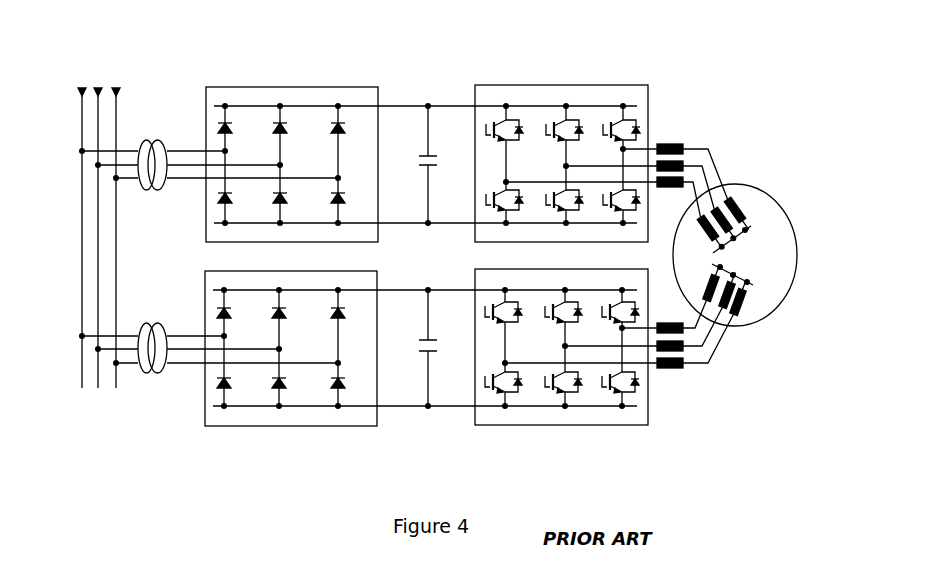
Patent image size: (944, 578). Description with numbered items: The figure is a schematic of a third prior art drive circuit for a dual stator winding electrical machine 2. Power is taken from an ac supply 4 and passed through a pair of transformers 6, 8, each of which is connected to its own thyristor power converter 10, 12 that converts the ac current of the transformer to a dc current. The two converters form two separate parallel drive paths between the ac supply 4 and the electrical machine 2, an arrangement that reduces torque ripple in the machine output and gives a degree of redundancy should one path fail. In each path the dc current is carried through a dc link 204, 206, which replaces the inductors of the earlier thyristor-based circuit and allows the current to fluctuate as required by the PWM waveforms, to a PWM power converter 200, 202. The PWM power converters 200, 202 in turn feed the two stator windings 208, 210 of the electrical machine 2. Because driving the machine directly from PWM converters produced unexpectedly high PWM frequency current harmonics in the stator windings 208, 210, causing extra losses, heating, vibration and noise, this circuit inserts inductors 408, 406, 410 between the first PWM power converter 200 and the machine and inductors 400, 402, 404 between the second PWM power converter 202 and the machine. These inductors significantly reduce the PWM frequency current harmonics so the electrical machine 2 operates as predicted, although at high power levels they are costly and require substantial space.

The ac supply 4 is at (104, 78).
The transformer 6 is at (148, 138).
The transformer 8 is at (158, 375).
The thyristor power converter 10 is at (294, 86).
The thyristor power converter 12 is at (274, 427).
The dc link 204 is at (420, 141).
The dc link 206 is at (418, 362).
The PWM power converter 200 is at (559, 85).
The PWM power converter 202 is at (577, 426).
The inductor 408 is at (665, 142).
The inductor 406 is at (684, 160).
The inductor 410 is at (682, 188).
The inductor 400 is at (675, 324).
The inductor 402 is at (684, 351).
The inductor 404 is at (668, 371).
The electrical machine 2 is at (746, 225).
The stator winding 208 is at (750, 200).
The stator winding 210 is at (753, 310).